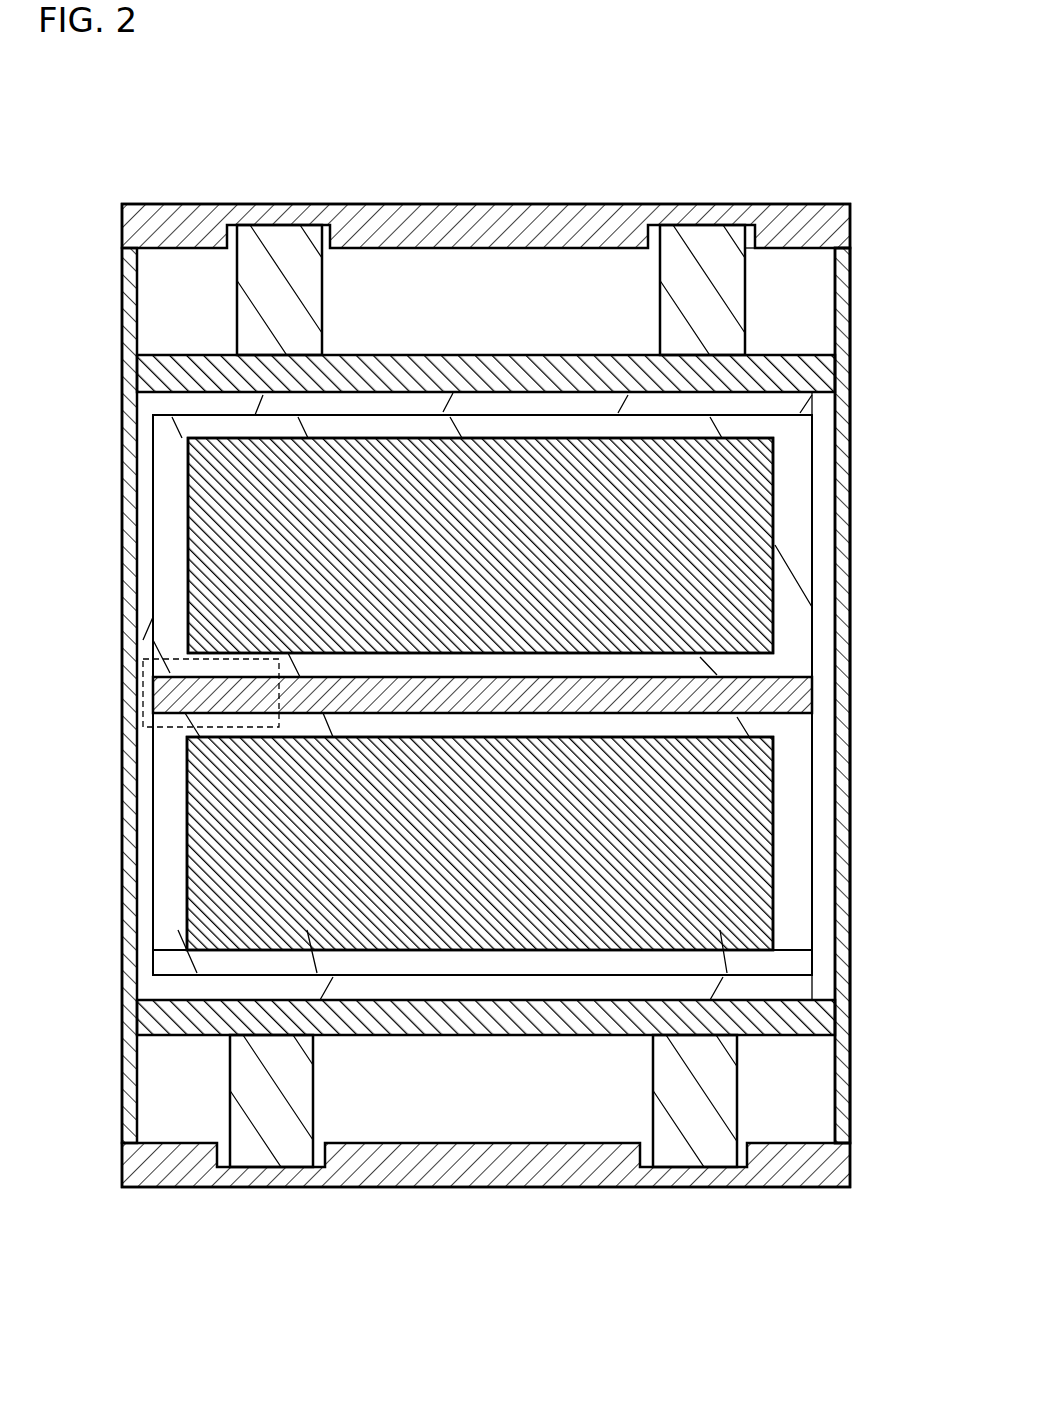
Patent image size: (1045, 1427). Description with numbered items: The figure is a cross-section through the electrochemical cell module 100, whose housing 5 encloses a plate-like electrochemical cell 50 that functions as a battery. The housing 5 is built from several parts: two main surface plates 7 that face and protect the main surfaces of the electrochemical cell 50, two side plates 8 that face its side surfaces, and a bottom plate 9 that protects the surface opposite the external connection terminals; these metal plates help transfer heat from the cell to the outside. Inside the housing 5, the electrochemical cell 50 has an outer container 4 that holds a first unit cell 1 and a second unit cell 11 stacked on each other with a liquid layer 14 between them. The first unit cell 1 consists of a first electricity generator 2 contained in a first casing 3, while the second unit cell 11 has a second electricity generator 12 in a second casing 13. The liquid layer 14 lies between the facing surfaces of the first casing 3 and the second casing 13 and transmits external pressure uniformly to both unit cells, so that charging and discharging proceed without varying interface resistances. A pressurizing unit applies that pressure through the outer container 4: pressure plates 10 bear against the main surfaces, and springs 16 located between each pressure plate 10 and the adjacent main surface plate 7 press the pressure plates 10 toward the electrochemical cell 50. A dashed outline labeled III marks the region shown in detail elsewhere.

The electrochemical cell module 100 is at (145, 170).
The first unit cell 1 is at (505, 428).
The first electricity generator 2 is at (557, 437).
The first casing 3 is at (410, 427).
The outer container 4 is at (184, 410).
The housing 5 is at (852, 495).
The main surface plate 7 is at (617, 205).
The side plate 8 is at (852, 393).
The bottom plate 9 is at (798, 295).
The pressure plate 10 is at (448, 392).
The second unit cell 11 is at (484, 962).
The second electricity generator 12 is at (445, 935).
The second casing 13 is at (543, 958).
The liquid layer 14 is at (777, 698).
The spring 16 is at (283, 240).
The electrochemical cell 50 is at (822, 633).
The section III region III is at (178, 658).